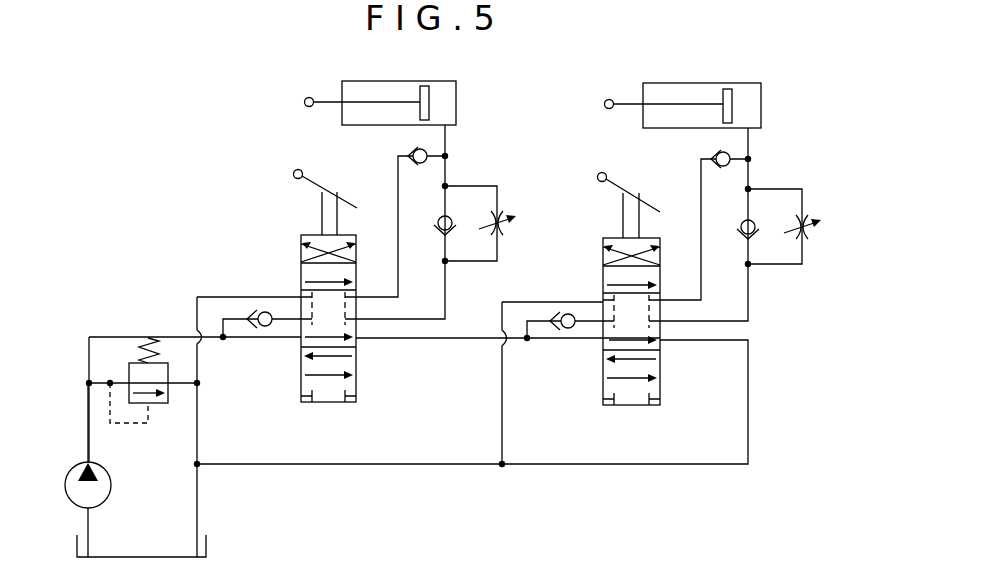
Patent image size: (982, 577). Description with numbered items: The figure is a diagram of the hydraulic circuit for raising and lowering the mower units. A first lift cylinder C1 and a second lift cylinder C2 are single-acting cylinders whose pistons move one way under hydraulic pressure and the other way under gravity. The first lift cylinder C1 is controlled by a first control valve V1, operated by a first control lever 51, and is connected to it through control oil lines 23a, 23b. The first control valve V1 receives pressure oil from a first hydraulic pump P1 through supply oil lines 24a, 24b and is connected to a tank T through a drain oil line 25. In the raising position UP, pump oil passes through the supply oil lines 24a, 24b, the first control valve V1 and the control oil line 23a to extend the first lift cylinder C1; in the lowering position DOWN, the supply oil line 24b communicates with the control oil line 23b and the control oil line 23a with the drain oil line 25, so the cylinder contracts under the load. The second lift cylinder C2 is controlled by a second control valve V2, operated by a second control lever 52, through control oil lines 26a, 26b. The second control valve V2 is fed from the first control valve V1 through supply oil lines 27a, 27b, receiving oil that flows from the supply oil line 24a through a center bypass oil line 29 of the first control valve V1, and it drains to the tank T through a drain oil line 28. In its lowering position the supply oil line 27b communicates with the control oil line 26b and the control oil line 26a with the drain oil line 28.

The first lift cylinder C1 is at (342, 88).
The second lift cylinder C2 is at (761, 90).
The first control valve V1 is at (300, 236).
The second control valve V2 is at (603, 238).
The first control lever 51 is at (298, 174).
The second control lever 52 is at (602, 176).
The control oil line 23a is at (447, 175).
The control oil line 23b is at (398, 222).
The control oil line 26a is at (750, 294).
The control oil line 26b is at (701, 222).
The drain oil line 25 is at (212, 297).
The supply oil line 24a is at (118, 336).
The supply oil line 24b is at (242, 322).
The supply oil line 27a is at (425, 340).
The supply oil line 27b is at (545, 323).
The drain oil line 28 is at (500, 410).
The center bypass oil line 29 is at (330, 328).
The first hydraulic pump P1 is at (111, 490).
The tank T is at (206, 545).